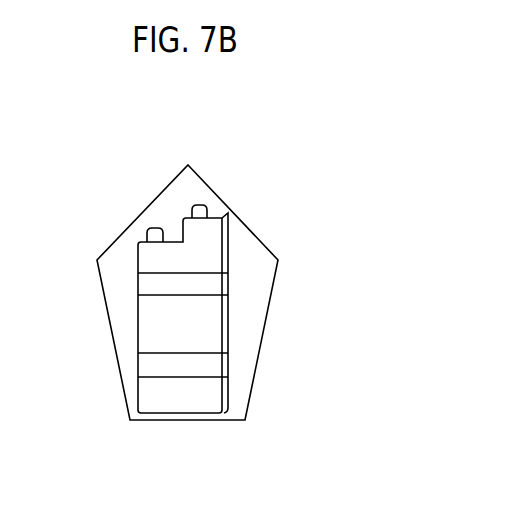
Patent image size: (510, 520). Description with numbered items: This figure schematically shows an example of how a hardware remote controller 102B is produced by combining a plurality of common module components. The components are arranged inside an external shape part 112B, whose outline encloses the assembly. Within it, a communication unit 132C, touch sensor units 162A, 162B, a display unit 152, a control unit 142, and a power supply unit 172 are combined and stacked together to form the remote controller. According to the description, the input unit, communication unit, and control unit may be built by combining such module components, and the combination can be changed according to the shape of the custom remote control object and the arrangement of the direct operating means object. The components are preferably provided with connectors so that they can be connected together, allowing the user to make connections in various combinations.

The hardware remote controller 102B is at (238, 159).
The external shape part 112B is at (265, 241).
The communication unit 132C is at (223, 207).
The touch sensor unit 162A is at (243, 274).
The display unit 152 is at (234, 301).
The touch sensor unit 162B is at (228, 321).
The control unit 142 is at (227, 313).
The power supply unit 172 is at (227, 391).